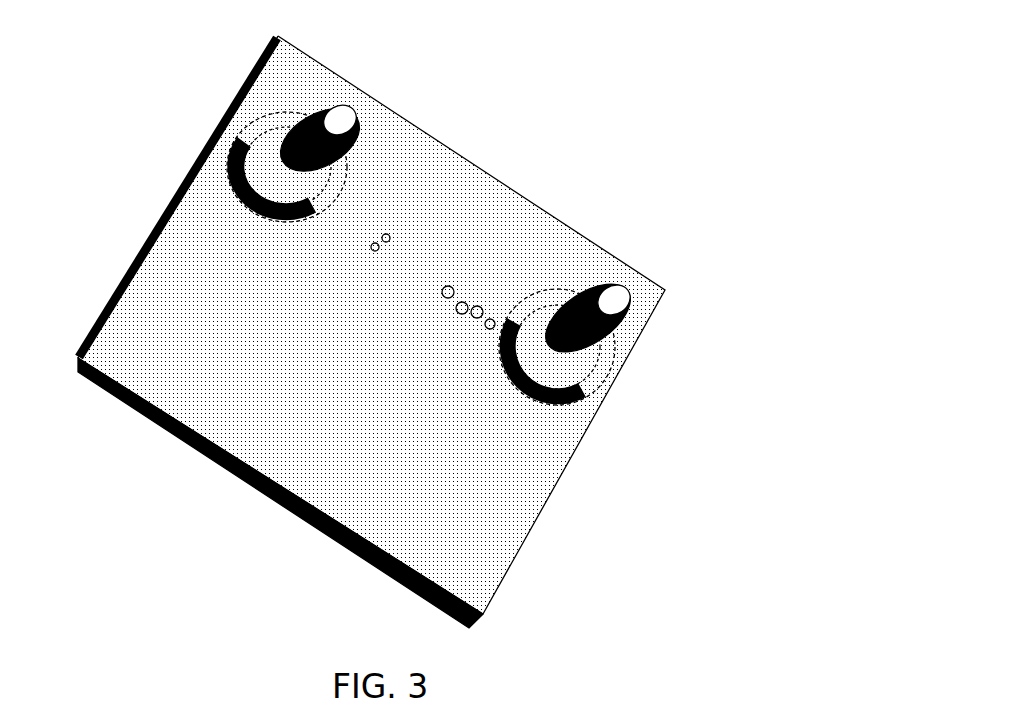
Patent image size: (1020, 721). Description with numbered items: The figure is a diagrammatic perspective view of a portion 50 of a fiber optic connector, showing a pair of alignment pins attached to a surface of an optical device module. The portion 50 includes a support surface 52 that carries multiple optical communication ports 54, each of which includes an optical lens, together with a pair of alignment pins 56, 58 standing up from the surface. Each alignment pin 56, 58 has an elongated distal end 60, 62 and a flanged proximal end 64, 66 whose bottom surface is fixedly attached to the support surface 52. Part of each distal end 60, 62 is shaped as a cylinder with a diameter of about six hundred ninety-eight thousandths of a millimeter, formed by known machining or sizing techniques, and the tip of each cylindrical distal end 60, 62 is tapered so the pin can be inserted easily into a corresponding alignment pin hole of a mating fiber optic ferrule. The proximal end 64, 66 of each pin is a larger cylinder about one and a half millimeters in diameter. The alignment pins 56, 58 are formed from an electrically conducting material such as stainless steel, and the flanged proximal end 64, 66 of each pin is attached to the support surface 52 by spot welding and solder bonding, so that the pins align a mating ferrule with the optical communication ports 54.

The portion of a fiber optic connector 50 is at (122, 116).
The support surface 52 is at (334, 380).
The optical communication ports 54 is at (380, 244).
The alignment pin 56 is at (374, 108).
The alignment pin 58 is at (630, 272).
The distal end 60 is at (322, 122).
The distal end 62 is at (584, 297).
The flanged proximal end 64 is at (278, 220).
The flanged proximal end 66 is at (507, 372).